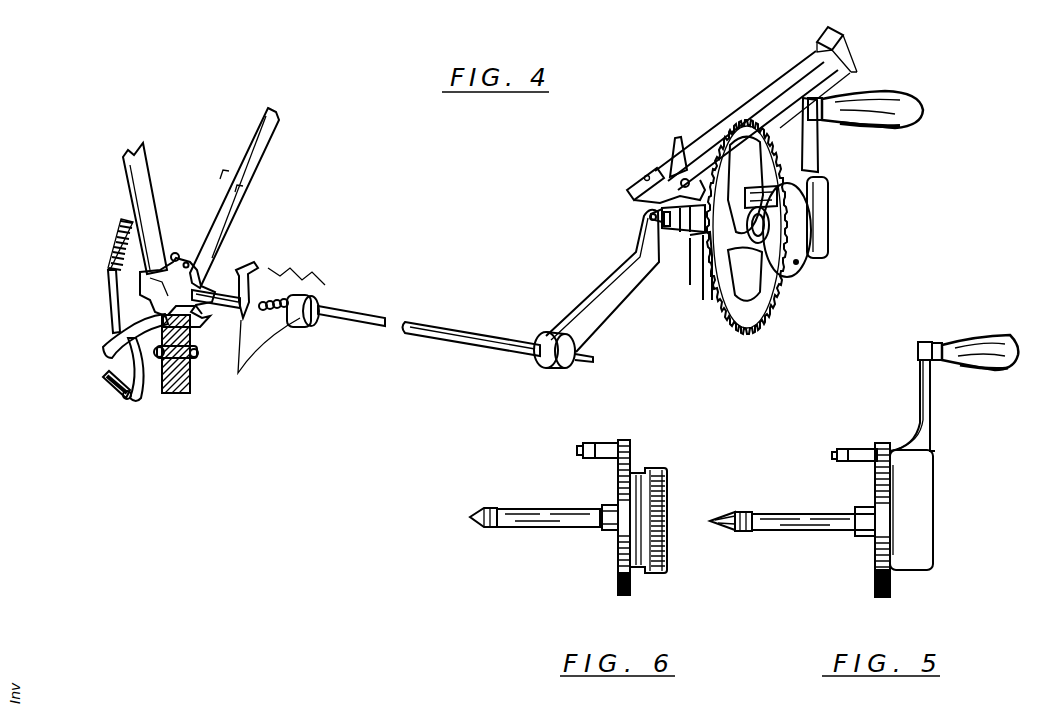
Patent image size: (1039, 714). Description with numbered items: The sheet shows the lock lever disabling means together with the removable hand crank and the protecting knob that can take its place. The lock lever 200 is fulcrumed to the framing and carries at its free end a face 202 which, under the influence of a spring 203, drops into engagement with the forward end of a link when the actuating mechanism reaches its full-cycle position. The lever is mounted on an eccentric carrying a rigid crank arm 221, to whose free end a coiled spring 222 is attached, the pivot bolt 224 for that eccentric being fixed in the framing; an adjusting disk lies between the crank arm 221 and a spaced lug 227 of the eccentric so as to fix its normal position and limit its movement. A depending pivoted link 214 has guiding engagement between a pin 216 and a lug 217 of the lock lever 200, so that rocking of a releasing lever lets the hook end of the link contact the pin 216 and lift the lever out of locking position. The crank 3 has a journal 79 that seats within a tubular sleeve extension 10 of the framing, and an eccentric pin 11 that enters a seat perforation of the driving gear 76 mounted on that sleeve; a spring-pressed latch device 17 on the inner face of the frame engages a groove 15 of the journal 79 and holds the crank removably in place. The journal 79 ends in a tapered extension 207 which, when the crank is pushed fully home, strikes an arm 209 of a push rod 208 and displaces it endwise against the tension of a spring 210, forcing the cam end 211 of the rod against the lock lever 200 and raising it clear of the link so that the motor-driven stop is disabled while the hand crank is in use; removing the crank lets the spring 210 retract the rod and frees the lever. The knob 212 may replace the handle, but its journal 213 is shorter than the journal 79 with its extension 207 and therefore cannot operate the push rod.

In FIG. 4, the crank 3 is at (876, 128).
In FIG. 5, the crank 3 is at (955, 364).
In FIG. 4, the tubular or sleeve extension 10 is at (697, 278).
In FIG. 4, the eccentric pin 11 is at (808, 122).
In FIG. 5, the eccentric pin 11 is at (843, 448).
In FIG. 4, the groove 15 is at (667, 222).
In FIG. 5, the groove 15 is at (748, 532).
In FIG. 4, the spring-pressed latch device 17 is at (680, 140).
In FIG. 4, the driving gear 76 is at (772, 292).
In FIG. 4, the journal 79 is at (676, 245).
In FIG. 5, the journal 79 is at (800, 528).
In FIG. 4, the lock lever 200 is at (177, 253).
In FIG. 4, the face 202 is at (277, 111).
In FIG. 4, the spring 203 is at (116, 250).
In FIG. 4, the tapered extension 207 is at (650, 215).
In FIG. 5, the tapered extension 207 is at (722, 518).
In FIG. 4, the push rod 208 is at (440, 327).
In FIG. 4, the arm 209 is at (590, 297).
In FIG. 4, the spring 210 is at (283, 302).
In FIG. 4, the cam end 211 is at (203, 292).
In FIG. 6, the knob 212 is at (658, 470).
In FIG. 6, the journal 213 is at (533, 525).
In FIG. 4, the pivoted link 214 is at (135, 176).
In FIG. 4, the pin 216 is at (176, 254).
In FIG. 4, the lug 217 is at (112, 278).
In FIG. 4, the crank arm 221 is at (138, 400).
In FIG. 4, the coiled spring 222 is at (112, 385).
In FIG. 4, the pivot bolt 224 is at (122, 345).
In FIG. 4, the lug 227 is at (103, 352).